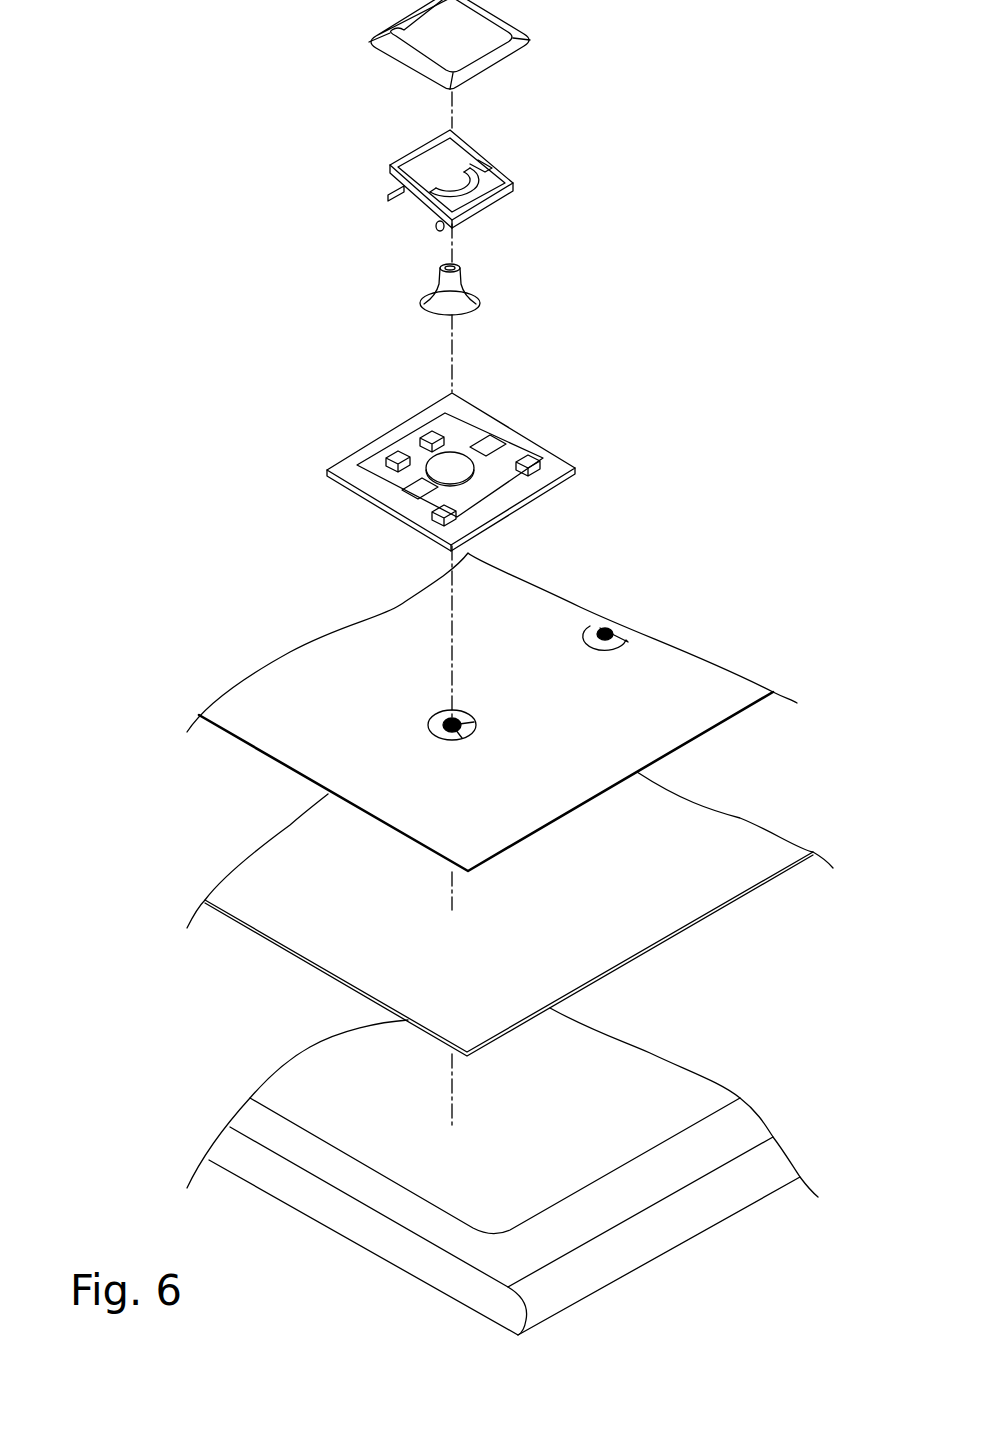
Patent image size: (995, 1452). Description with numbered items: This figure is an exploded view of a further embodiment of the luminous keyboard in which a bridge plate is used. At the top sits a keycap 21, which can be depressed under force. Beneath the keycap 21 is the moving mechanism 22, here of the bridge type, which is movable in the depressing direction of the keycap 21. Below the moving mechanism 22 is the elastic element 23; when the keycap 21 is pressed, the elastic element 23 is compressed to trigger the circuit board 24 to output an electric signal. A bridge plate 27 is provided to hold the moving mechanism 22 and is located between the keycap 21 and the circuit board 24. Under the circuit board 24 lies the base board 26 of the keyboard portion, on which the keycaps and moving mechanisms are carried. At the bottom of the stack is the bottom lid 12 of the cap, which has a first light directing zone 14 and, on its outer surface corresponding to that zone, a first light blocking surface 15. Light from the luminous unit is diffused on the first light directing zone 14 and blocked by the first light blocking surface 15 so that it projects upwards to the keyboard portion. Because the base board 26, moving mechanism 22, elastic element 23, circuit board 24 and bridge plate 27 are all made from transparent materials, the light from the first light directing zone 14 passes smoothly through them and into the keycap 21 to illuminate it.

The keycap 21 is at (478, 48).
The moving mechanism 22 is at (477, 205).
The elastic element 23 is at (458, 308).
The bridge plate 27 is at (512, 500).
The circuit board 24 is at (692, 720).
The base board 26 is at (638, 933).
The first light directing zone 14 is at (662, 1083).
The first light blocking surface 15 is at (693, 1213).
The bottom lid 12 is at (617, 1285).